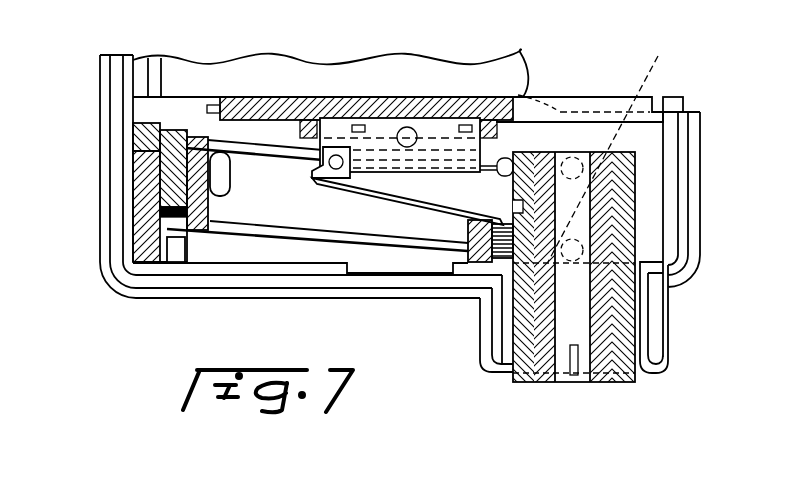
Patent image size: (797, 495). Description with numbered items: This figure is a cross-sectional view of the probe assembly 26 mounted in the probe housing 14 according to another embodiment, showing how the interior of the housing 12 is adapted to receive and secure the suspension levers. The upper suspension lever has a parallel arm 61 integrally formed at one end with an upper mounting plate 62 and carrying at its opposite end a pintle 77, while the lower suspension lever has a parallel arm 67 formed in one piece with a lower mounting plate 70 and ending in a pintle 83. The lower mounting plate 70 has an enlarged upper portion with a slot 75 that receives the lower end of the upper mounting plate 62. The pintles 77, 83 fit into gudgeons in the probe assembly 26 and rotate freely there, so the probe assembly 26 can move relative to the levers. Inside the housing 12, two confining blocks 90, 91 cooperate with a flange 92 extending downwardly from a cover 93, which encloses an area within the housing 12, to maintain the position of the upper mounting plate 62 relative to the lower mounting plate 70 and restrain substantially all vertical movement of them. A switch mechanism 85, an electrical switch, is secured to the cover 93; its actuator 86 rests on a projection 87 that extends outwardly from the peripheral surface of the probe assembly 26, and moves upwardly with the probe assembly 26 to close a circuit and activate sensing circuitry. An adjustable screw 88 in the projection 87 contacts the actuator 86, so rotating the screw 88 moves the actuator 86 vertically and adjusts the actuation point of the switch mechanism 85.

The housing 12 is at (103, 113).
The probe housing 14 is at (668, 312).
The probe assembly 26 is at (636, 382).
The arm 61 is at (247, 142).
The mounting plate 62 is at (150, 178).
The arm 67 is at (275, 223).
The mounting plate 70 is at (137, 268).
The slot 75 is at (158, 207).
The pintle 77 is at (545, 150).
The pintle 83 is at (613, 146).
The switch mechanism 85 is at (430, 130).
The actuator 86 is at (372, 196).
The projection 87 is at (467, 232).
The adjustable screw 88 is at (497, 262).
The confining block 90 is at (176, 252).
The confining block 91 is at (226, 186).
The flange 92 is at (204, 110).
The cover 93 is at (173, 103).